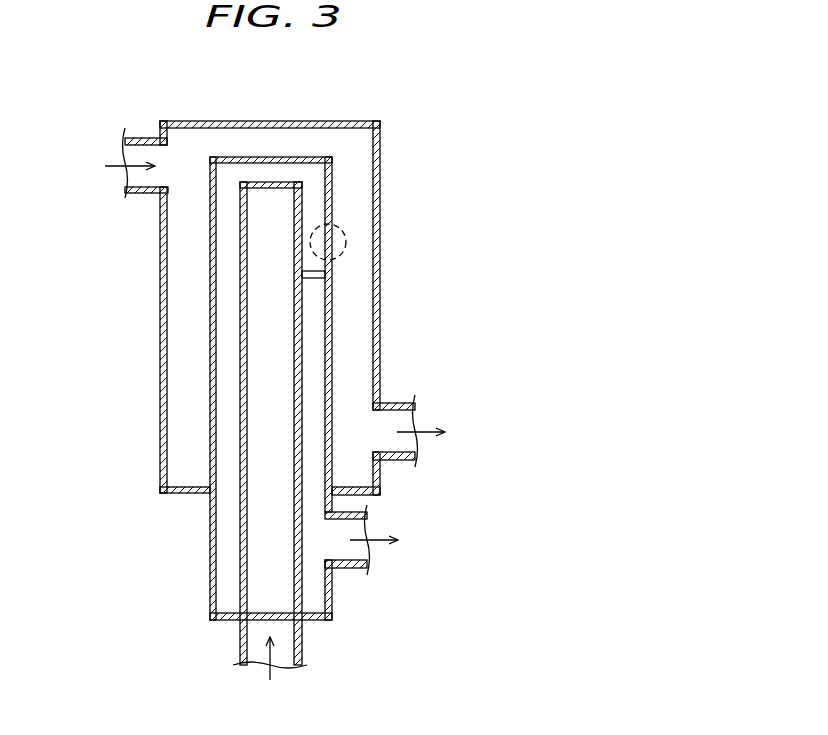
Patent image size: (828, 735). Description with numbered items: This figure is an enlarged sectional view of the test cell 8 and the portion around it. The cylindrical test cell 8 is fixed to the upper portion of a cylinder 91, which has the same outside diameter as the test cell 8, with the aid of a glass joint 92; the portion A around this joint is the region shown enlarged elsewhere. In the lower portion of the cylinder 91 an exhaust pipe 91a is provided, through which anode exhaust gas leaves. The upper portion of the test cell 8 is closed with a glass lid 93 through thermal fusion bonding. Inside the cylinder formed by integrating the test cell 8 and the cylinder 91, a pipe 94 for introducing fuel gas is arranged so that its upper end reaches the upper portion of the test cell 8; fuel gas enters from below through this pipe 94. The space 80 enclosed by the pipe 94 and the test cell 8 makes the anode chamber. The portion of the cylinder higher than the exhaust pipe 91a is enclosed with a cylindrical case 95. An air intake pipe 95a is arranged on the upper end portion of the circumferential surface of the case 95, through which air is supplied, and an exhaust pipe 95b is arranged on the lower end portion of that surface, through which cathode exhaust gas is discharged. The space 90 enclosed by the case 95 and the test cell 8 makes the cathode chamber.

The cylindrical case 95 is at (350, 122).
The air intake pipe 95a is at (145, 136).
The exhaust pipe 95b is at (410, 462).
The space 90 is at (185, 247).
The glass lid 93 is at (273, 153).
The cylinder 91 is at (328, 377).
The exhaust pipe 91a is at (358, 566).
The pipe for introducing fuel gas 94 is at (300, 328).
The glass joint 92 is at (325, 275).
The space 80 is at (228, 200).
The test cell 8 is at (330, 190).
The portion A is at (332, 218).